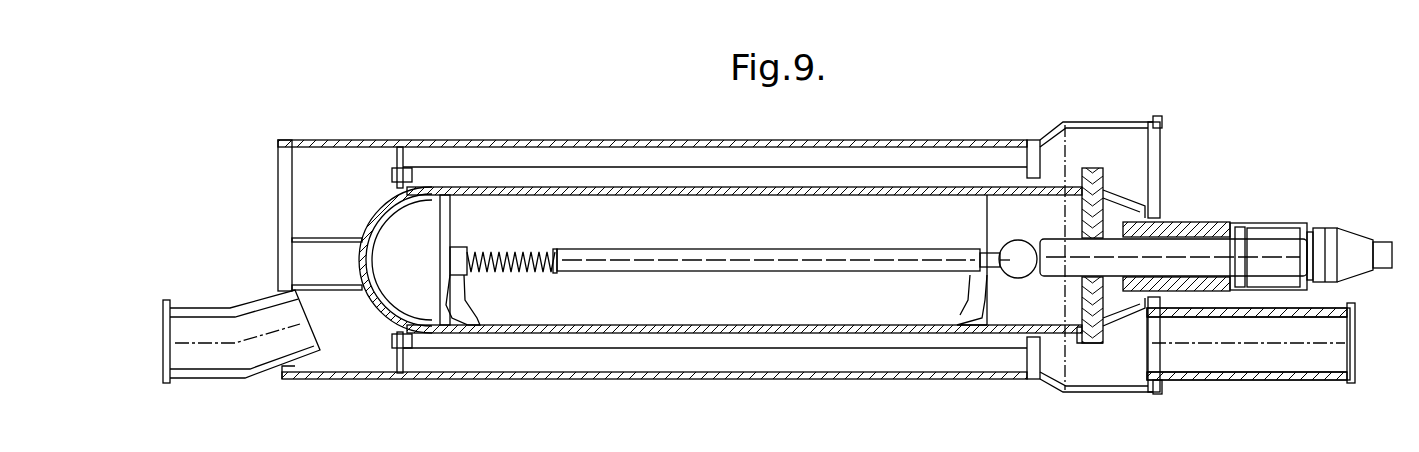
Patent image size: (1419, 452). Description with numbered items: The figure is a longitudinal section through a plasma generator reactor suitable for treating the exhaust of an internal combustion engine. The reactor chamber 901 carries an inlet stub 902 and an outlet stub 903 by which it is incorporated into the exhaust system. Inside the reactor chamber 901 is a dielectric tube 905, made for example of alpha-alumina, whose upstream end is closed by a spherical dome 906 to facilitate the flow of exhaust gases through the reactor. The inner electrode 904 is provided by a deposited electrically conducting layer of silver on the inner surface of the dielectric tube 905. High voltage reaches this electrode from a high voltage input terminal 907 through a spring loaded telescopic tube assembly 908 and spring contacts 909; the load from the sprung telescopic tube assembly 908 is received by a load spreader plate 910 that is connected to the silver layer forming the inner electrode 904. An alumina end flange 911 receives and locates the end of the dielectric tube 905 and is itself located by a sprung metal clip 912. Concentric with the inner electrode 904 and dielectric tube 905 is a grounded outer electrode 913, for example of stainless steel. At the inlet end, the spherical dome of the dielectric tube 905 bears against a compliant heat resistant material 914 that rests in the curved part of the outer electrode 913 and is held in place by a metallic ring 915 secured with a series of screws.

The reactor chamber 901 is at (847, 140).
The inlet stub 902 is at (190, 378).
The outlet stub 903 is at (1233, 382).
The inner electrode 904 is at (680, 200).
The dielectric tube 905 is at (581, 187).
The spherical dome 906 is at (376, 255).
The high voltage input terminal 907 is at (1345, 231).
The spring loaded telescopic tube assembly 908 is at (910, 254).
The spring contacts 909 is at (478, 308).
The load spreader plate 910 is at (448, 203).
The alumina end flange 911 is at (1087, 168).
The sprung metal clip 912 is at (1127, 202).
The outer electrode 913 is at (799, 166).
The compliant heat resistant material 914 is at (403, 360).
The metallic ring 915 is at (408, 178).